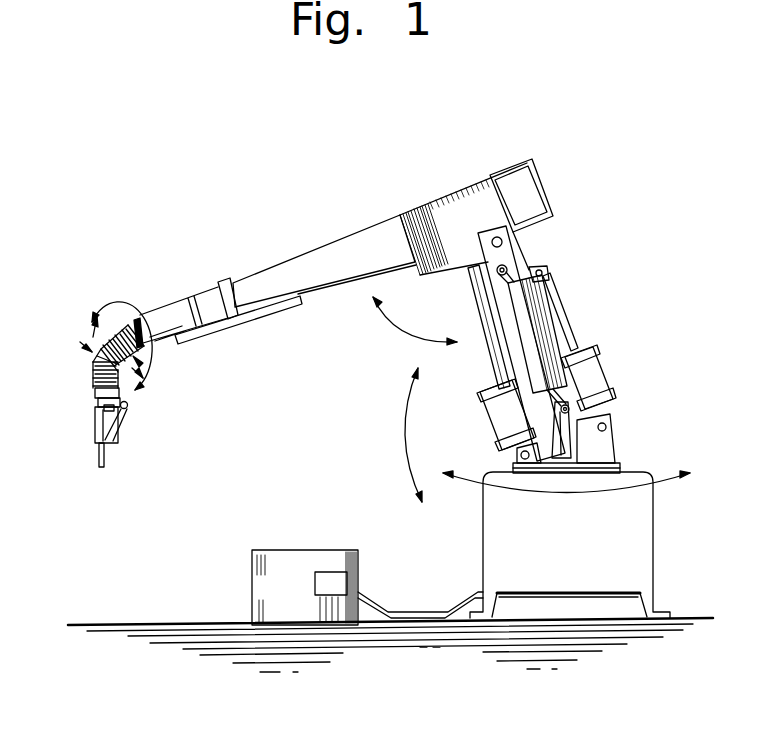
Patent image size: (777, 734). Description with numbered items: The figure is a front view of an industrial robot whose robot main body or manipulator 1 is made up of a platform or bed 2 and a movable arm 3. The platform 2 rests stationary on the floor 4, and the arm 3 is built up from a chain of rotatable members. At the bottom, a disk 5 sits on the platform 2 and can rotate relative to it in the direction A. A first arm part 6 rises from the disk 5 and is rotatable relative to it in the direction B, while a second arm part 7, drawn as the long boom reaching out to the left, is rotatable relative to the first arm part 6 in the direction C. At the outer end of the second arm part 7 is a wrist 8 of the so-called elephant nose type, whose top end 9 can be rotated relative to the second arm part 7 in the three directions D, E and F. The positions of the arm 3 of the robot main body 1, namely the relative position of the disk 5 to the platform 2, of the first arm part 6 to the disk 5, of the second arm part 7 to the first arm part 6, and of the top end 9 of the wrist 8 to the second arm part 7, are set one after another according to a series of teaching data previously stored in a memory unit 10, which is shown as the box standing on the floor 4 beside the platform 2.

The robot main body 1 is at (462, 170).
The platform 2 is at (530, 532).
The movable arm 3 is at (392, 202).
The floor 4 is at (210, 637).
The disk 5 is at (600, 450).
The first arm part 6 is at (513, 323).
The second arm part 7 is at (328, 252).
The wrist 8 is at (93, 373).
The top end 9 is at (97, 392).
The memory unit 10 is at (332, 578).
The direction A is at (500, 490).
The direction B is at (405, 407).
The direction C is at (385, 315).
The direction D is at (126, 300).
The direction E is at (92, 338).
The direction F is at (92, 356).